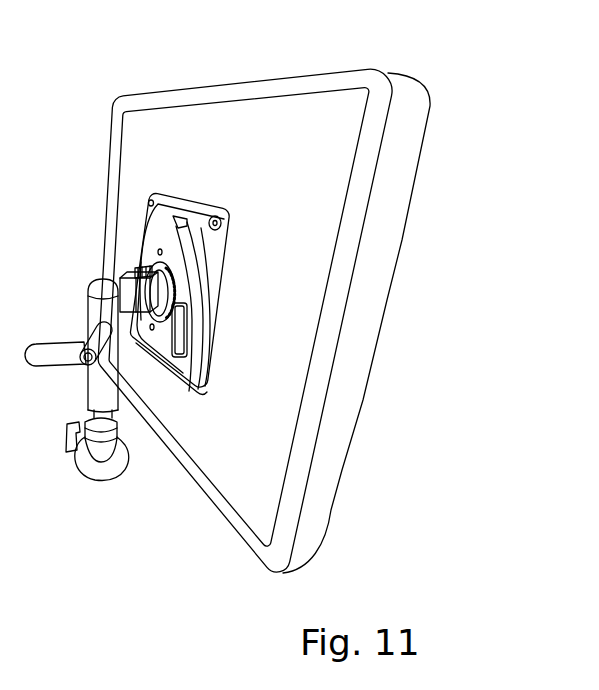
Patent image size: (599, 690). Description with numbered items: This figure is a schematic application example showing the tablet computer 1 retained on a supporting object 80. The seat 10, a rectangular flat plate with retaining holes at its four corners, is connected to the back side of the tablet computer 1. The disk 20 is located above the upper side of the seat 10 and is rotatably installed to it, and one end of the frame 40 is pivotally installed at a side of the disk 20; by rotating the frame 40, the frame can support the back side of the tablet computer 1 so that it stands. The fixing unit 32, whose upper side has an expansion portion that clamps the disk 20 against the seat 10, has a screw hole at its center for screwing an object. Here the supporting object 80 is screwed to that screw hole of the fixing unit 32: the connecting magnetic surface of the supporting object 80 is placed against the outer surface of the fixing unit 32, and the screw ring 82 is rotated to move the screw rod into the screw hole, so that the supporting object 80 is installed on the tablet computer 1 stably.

The tablet computer 1 is at (420, 97).
The seat 10 is at (221, 275).
The disk 20 is at (147, 245).
The fixing unit 32 is at (167, 295).
The frame 40 is at (193, 229).
The supporting object 80 is at (83, 316).
The screw ring 82 is at (140, 266).